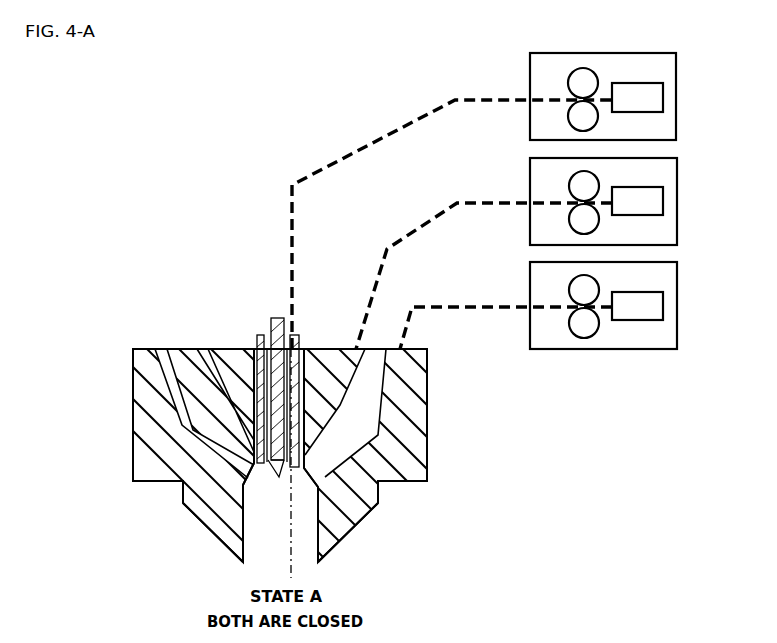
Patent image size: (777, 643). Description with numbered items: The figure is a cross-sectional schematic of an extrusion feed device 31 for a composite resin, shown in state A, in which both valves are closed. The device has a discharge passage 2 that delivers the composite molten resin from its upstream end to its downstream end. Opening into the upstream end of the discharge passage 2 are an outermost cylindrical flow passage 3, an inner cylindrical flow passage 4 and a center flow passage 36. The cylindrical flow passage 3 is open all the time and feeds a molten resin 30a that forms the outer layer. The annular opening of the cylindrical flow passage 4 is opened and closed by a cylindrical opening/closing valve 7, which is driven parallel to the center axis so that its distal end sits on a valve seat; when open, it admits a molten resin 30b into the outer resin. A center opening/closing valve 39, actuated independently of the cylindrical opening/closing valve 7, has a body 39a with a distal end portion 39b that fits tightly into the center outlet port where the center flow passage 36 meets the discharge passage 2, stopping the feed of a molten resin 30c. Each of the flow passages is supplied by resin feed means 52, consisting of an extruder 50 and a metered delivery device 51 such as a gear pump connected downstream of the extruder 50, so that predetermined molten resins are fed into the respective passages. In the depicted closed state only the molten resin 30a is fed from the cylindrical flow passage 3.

The discharge passage 2 is at (300, 543).
The cylindrical flow passage 3 is at (220, 465).
The cylindrical flow passage 4 is at (198, 349).
The cylindrical opening/closing valve 7 is at (255, 338).
The extrusion feed device for a composite resin 31 is at (221, 546).
The center flow passage 36 is at (266, 318).
The center opening/closing valve 39 is at (278, 316).
The body 39a is at (295, 336).
The distal end portion 39b is at (266, 474).
The molten resin 30a is at (437, 297).
The molten resin 30b is at (408, 219).
The molten resin 30c is at (384, 124).
The extruder 50 is at (636, 83).
The metered delivery device 51 is at (586, 68).
The resin feed means 52 is at (677, 93).